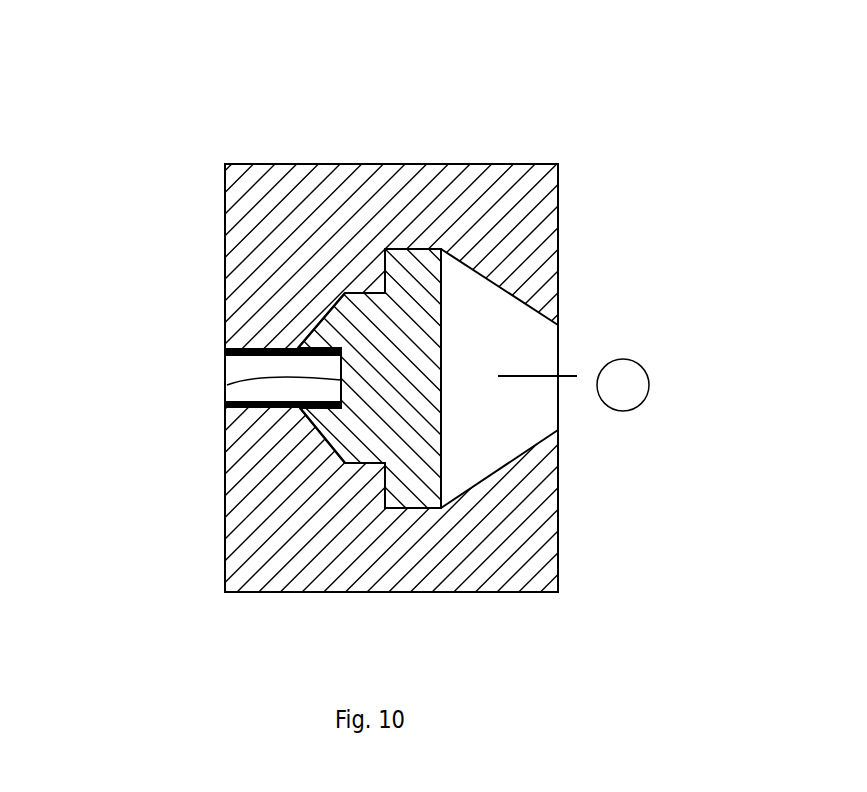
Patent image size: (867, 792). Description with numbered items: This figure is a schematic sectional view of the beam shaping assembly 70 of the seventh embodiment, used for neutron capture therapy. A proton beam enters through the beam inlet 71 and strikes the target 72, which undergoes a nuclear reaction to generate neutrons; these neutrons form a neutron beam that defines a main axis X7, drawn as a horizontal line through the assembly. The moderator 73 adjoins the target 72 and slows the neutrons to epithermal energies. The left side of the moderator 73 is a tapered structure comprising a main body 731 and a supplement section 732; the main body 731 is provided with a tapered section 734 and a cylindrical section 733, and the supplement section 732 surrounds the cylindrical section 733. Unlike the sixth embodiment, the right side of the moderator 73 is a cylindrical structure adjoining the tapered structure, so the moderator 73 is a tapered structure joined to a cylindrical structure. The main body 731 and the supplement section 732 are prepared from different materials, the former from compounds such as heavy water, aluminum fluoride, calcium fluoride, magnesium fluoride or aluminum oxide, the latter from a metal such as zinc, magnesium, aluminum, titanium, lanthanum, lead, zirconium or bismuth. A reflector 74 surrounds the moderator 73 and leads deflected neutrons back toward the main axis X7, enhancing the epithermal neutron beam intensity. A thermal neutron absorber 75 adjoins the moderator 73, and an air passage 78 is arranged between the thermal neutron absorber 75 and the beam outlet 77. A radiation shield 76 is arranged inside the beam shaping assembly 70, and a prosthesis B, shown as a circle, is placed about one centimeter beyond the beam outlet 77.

The beam shaping assembly 70 is at (257, 33).
The beam inlet 71 is at (227, 366).
The target 72 is at (227, 385).
The moderator 73 is at (102, 463).
The main body 731 is at (370, 435).
The supplement section 732 is at (370, 480).
The cylindrical section 733 is at (356, 291).
The tapered section 734 is at (324, 317).
The reflector 74 is at (430, 563).
The thermal neutron absorber 75 is at (441, 380).
The radiation shield 76 is at (590, 187).
The beam outlet 77 is at (535, 417).
The air passage 78 is at (472, 336).
The main axis X7 is at (556, 350).
The prosthesis B is at (618, 360).